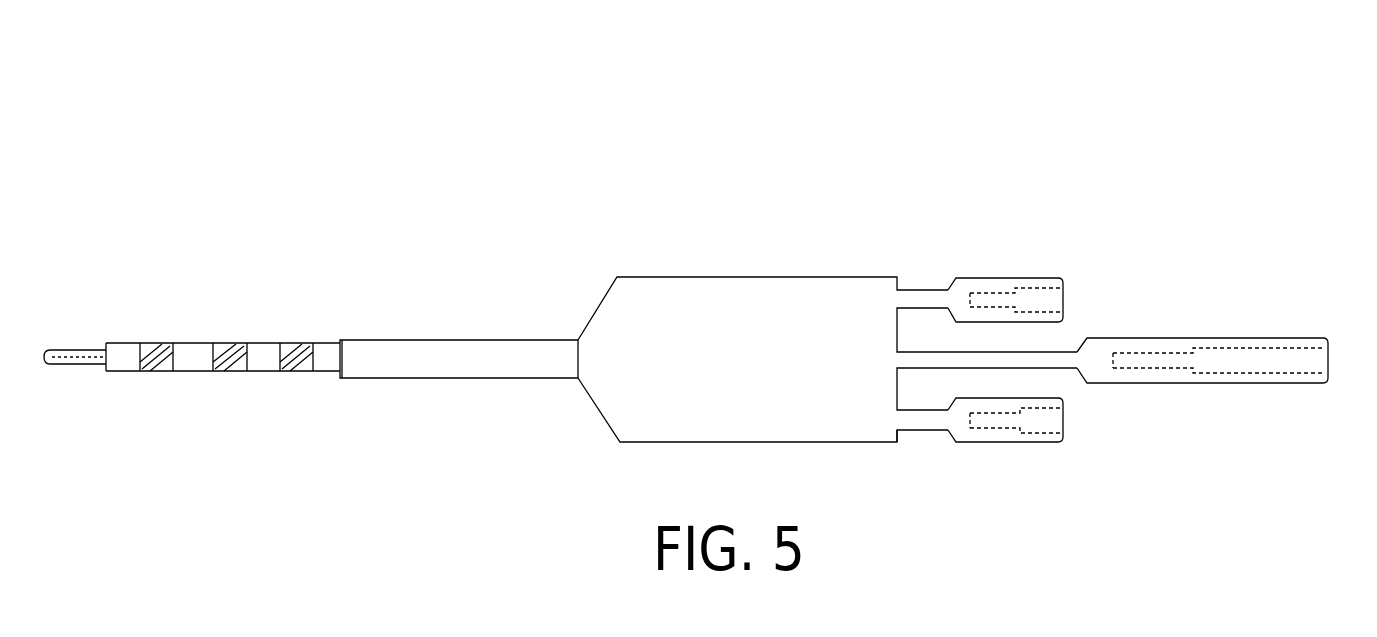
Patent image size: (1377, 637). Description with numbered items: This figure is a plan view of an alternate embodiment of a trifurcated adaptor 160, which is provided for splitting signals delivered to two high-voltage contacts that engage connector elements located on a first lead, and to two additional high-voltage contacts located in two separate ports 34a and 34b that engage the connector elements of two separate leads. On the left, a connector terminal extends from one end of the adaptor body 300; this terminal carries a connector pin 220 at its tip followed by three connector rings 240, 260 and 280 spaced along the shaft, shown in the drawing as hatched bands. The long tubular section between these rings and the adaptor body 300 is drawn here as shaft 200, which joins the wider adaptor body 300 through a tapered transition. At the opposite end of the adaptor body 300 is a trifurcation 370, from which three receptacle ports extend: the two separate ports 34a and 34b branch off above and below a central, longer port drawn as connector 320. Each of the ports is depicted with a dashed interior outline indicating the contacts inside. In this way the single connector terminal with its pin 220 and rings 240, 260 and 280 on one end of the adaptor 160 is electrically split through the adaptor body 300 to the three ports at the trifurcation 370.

The adaptor 160 is at (569, 102).
The catheter shaft 200 is at (246, 244).
The connector pin 220 is at (50, 365).
The connector ring 240 is at (150, 372).
The connector ring 260 is at (222, 372).
The connector ring 280 is at (297, 372).
The adaptor body 300 is at (685, 278).
The receptacle port 34a is at (997, 442).
The receptacle port 34b is at (990, 277).
The electrical connector 320 is at (1270, 338).
The trifurcation 370 is at (913, 442).